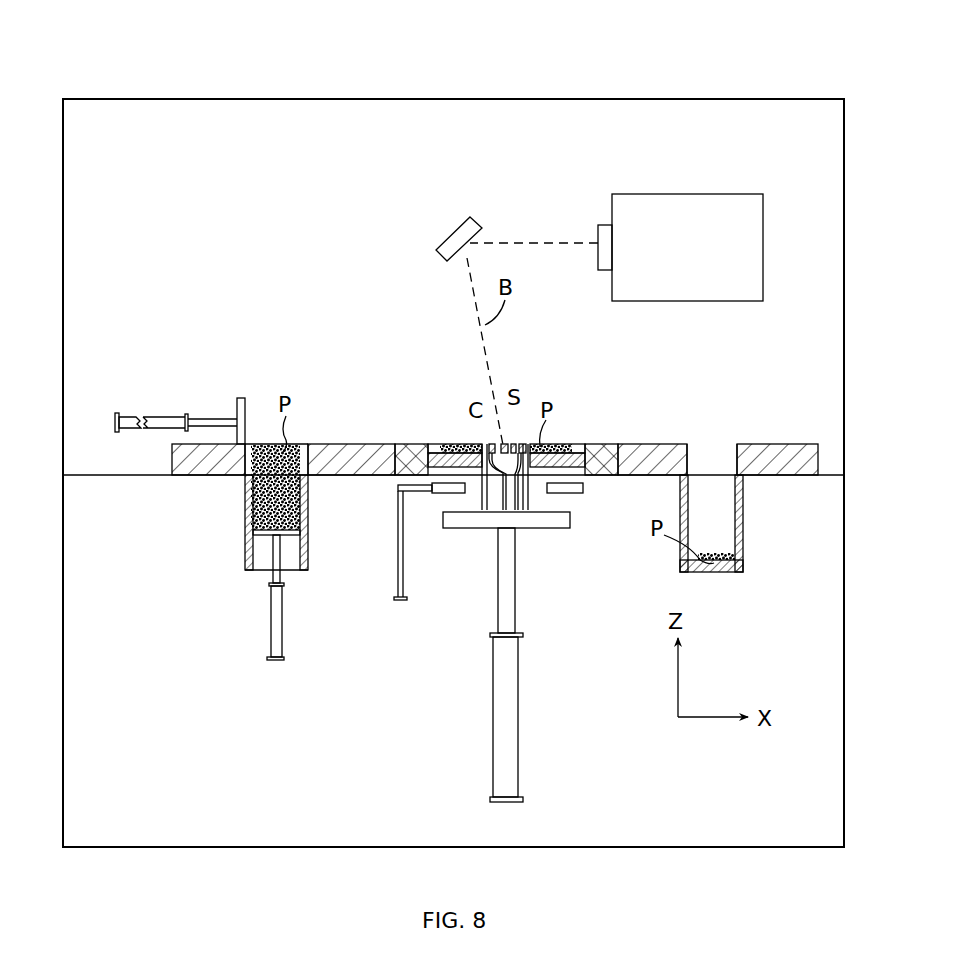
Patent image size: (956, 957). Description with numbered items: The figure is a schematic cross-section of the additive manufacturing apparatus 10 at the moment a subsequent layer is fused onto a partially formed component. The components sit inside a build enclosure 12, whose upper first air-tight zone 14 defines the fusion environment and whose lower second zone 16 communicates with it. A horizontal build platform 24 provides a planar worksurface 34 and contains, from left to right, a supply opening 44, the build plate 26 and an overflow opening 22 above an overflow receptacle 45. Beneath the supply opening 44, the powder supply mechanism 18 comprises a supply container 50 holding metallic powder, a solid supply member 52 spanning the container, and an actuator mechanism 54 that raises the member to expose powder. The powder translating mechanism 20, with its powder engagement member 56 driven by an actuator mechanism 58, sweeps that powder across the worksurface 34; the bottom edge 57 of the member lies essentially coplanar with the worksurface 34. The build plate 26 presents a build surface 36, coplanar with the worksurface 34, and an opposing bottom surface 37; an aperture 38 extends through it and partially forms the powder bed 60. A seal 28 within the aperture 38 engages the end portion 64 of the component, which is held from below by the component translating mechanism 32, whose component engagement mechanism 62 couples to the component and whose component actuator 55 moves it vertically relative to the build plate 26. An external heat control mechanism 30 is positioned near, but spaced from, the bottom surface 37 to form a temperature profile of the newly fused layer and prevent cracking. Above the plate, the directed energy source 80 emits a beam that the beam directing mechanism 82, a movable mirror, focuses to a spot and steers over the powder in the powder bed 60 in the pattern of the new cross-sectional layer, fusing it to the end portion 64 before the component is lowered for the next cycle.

The additive manufacturing apparatus 10 is at (162, 54).
The build enclosure 12 is at (275, 99).
The first air-tight zone 14 is at (63, 243).
The second zone 16 is at (63, 582).
The powder supply mechanism 18 is at (240, 604).
The powder translating mechanism 20 is at (212, 386).
The overflow opening 22 is at (712, 444).
The build platform 24 is at (795, 475).
The build plate 26 is at (410, 450).
The seal 28 is at (436, 448).
The external heat control mechanism 30 is at (445, 488).
The component translating mechanism 32 is at (545, 618).
The worksurface 34 is at (778, 443).
The build surface 36 is at (607, 446).
The bottom surface 37 is at (592, 470).
The aperture 38 is at (455, 450).
The supply opening 44 is at (240, 462).
The overflow receptacle 45 is at (743, 552).
The supply container 50 is at (305, 557).
The supply member 52 is at (300, 530).
The actuator mechanism 54 is at (278, 622).
The component actuator 55 is at (506, 737).
The powder engagement member 56 is at (241, 398).
The bottom edge 57 is at (240, 455).
The actuator mechanism 58 is at (160, 415).
The powder bed 60 is at (537, 444).
The component engagement mechanism 62 is at (545, 528).
The end portion 64 is at (502, 443).
The directed energy source 80 is at (646, 194).
The beam directing mechanism 82 is at (455, 232).